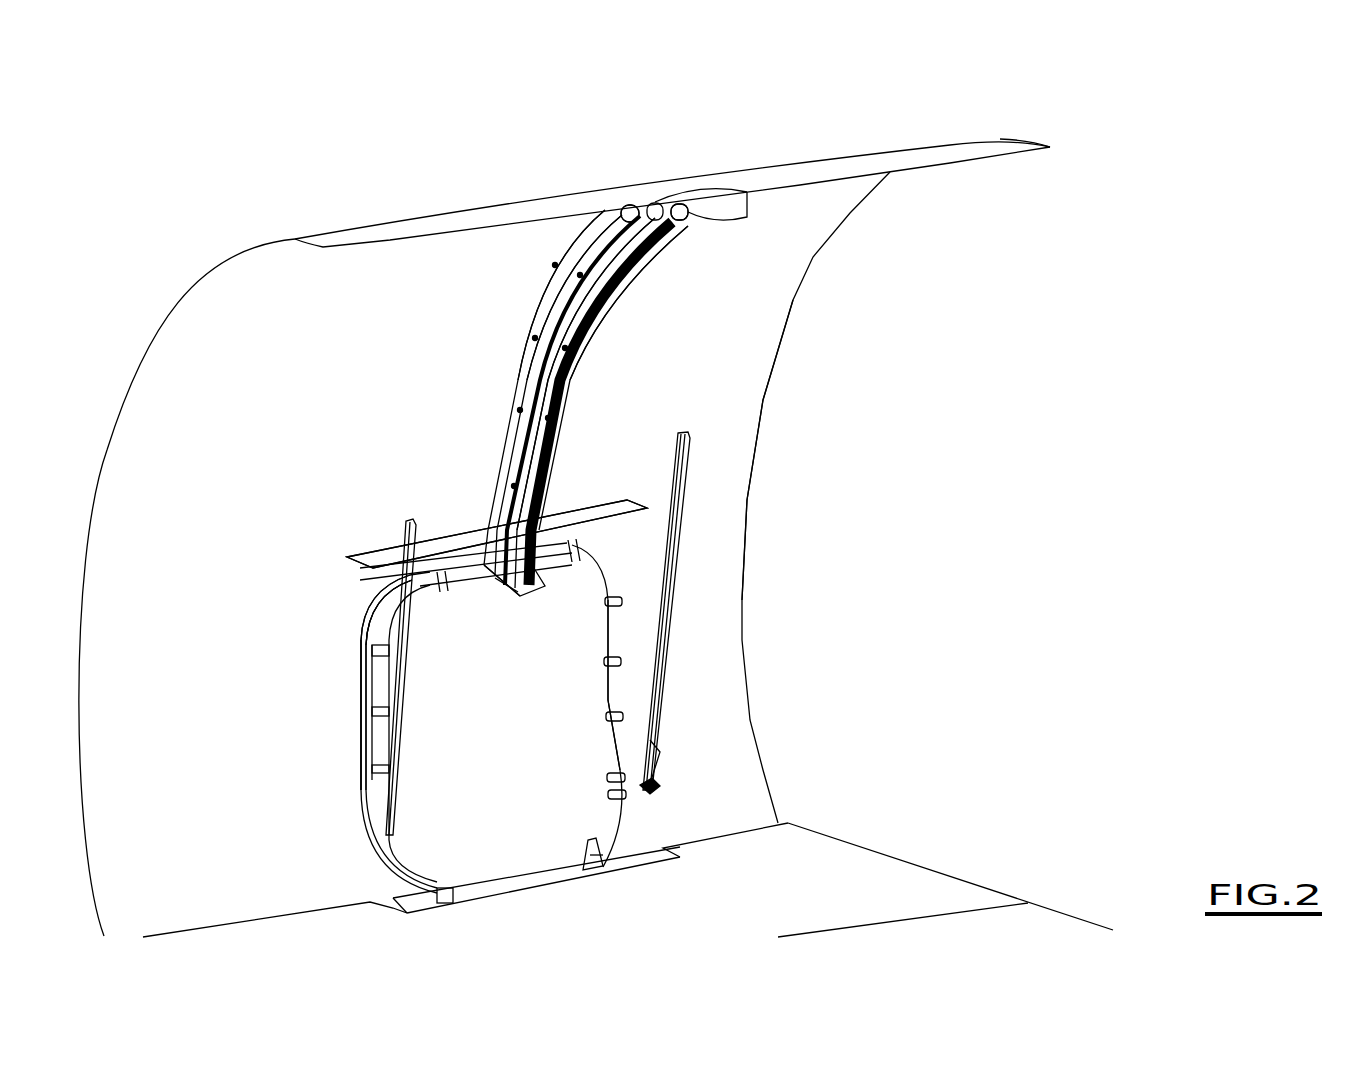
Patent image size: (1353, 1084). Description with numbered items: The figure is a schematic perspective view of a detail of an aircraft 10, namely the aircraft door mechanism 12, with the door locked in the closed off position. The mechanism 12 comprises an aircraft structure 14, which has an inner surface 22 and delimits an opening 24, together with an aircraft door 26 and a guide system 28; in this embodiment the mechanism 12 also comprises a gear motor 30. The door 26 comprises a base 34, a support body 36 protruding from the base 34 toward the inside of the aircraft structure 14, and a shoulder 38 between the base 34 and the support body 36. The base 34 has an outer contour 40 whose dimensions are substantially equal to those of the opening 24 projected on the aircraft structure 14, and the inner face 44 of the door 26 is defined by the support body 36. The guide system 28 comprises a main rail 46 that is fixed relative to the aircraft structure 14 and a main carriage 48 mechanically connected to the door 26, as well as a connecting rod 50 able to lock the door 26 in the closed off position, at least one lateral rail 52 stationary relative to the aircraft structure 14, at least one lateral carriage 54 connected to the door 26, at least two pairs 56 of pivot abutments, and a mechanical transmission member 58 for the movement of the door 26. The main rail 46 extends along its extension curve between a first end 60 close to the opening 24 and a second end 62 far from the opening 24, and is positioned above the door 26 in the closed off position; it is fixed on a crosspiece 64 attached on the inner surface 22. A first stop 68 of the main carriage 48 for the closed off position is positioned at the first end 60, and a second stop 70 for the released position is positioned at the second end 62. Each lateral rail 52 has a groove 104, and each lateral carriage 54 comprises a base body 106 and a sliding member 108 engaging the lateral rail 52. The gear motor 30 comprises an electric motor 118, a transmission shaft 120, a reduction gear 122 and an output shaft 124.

The aircraft 10 is at (947, 120).
The aircraft door mechanism 12 is at (390, 190).
The aircraft structure 14 is at (815, 321).
The inner surface 22 is at (738, 360).
The opening 24 is at (360, 666).
The aircraft door 26 is at (350, 722).
The guide system 28 is at (545, 335).
The gear motor 30 is at (680, 178).
The base 34 is at (370, 612).
The support body 36 is at (600, 700).
The shoulder 38 is at (395, 614).
The outer contour 40 is at (385, 682).
The inner face 44 is at (614, 685).
The main rail 46 is at (568, 383).
The main carriage 48 is at (543, 583).
The connecting rod 50 is at (500, 594).
The lateral rail 52 is at (372, 796).
The lateral carriage 54 is at (390, 907).
The pair of pivot abutments 56 is at (472, 896).
The mechanical transmission member 58 is at (570, 282).
The first end 60 is at (485, 530).
The second end 62 is at (702, 237).
The crosspiece 64 is at (517, 338).
The first stop 68 is at (497, 534).
The second stop 70 is at (616, 301).
The groove 104 is at (662, 752).
The base body 106 is at (625, 799).
The sliding member 108 is at (657, 788).
The electric motor 118 is at (620, 210).
The transmission shaft 120 is at (630, 213).
The reduction gear 122 is at (640, 192).
The output shaft 124 is at (679, 212).